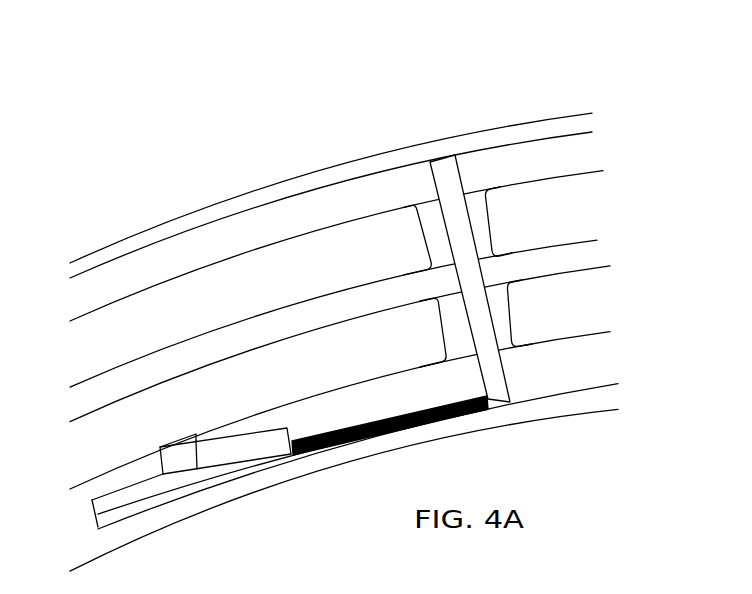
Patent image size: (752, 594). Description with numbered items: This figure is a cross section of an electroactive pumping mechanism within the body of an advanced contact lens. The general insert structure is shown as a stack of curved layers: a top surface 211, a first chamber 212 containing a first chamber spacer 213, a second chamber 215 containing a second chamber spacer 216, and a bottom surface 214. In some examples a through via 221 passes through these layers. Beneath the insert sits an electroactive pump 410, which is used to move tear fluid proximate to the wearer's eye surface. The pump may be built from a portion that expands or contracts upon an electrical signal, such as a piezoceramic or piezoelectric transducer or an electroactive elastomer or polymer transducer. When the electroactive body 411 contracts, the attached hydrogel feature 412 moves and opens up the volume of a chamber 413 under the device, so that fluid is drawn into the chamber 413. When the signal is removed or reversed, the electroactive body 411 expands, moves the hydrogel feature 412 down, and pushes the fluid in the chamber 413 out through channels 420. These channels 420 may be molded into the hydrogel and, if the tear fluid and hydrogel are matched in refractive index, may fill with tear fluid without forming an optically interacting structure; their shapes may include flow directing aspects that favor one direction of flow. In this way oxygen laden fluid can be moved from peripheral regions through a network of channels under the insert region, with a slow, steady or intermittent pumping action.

The top surface 211 is at (525, 160).
The first chamber 212 is at (539, 215).
The first chamber spacer 213 is at (489, 242).
The bottom surface 214 is at (556, 374).
The second chamber 215 is at (552, 317).
The second chamber spacer 216 is at (451, 318).
The through via 221 is at (446, 183).
The electroactive pump 410 is at (250, 440).
The electroactive body 411 is at (185, 445).
The hydrogel feature 412 is at (172, 475).
The chamber 413 is at (152, 499).
The channels 420 is at (449, 419).